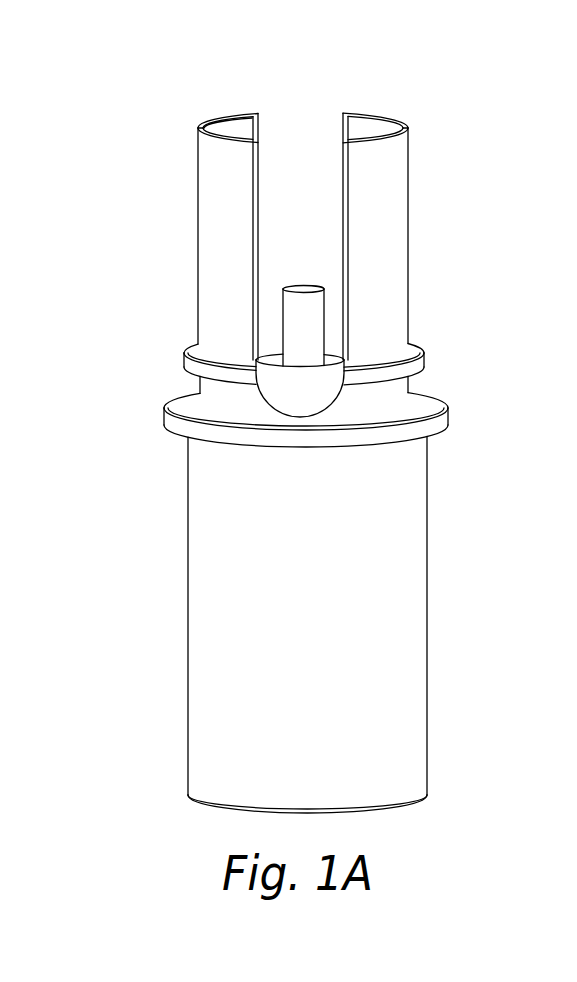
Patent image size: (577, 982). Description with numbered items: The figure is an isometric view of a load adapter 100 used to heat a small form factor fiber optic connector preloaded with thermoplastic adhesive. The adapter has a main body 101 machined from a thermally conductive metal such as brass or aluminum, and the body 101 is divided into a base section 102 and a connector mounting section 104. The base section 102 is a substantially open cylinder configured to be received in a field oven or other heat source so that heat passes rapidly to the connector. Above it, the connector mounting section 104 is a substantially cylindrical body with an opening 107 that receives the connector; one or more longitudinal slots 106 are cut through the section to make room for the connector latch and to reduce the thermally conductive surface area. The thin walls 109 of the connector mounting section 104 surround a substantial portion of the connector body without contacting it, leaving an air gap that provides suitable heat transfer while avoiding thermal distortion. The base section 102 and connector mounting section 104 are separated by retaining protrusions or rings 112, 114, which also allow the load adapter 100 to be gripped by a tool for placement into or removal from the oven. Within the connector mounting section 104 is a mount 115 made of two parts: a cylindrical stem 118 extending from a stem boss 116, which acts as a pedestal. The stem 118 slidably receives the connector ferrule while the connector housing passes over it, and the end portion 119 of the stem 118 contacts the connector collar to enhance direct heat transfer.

The load adapter 100 is at (285, 414).
The main body 101 is at (187, 462).
The base section 102 is at (242, 625).
The connector mounting section 104 is at (280, 201).
The slot 106 is at (303, 122).
The opening 107 is at (245, 127).
The wall 109 is at (198, 172).
The retaining ring 112 is at (418, 358).
The retaining ring 114 is at (440, 420).
The mount 115 is at (283, 330).
The stem boss 116 is at (310, 368).
The stem 118 is at (326, 323).
The end portion 119 is at (303, 287).